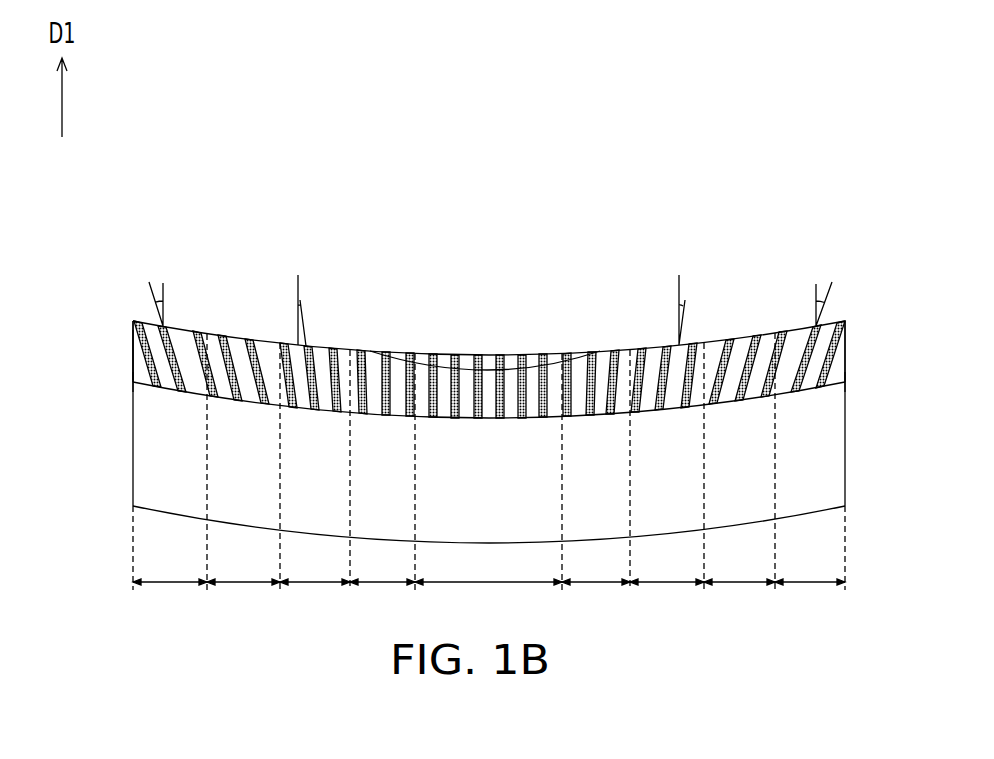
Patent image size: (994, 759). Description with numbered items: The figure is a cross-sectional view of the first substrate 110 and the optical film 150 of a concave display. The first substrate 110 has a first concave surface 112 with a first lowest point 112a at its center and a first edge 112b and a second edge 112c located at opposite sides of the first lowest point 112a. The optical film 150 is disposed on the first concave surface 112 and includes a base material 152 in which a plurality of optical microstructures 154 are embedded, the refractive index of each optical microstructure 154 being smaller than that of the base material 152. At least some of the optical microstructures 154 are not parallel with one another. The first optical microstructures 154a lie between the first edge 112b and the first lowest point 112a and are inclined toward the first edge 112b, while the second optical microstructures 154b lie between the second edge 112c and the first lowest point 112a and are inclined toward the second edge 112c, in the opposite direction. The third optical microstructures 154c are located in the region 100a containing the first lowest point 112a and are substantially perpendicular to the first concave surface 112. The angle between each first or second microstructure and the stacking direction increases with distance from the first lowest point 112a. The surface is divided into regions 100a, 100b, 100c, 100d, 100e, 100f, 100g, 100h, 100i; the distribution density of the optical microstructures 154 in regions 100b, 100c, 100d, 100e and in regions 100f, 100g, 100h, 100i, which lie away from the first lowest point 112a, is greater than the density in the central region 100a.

The first substrate 110 is at (820, 457).
The first concave surface 112 is at (133, 345).
The first lowest point 112a is at (490, 417).
The first edge 112b is at (846, 382).
The second edge 112c is at (133, 380).
The optical film 150 is at (820, 362).
The base material 152 is at (398, 377).
The optical microstructures 154 is at (481, 291).
The first optical microstructures 154a is at (688, 345).
The second optical microstructures 154b is at (173, 380).
The third optical microstructures 154c is at (433, 363).
The region 100a is at (488, 489).
The region 100b is at (596, 487).
The region 100c is at (667, 484).
The region 100d is at (739, 479).
The region 100e is at (810, 602).
The region 100f is at (382, 489).
The region 100g is at (315, 487).
The region 100h is at (243, 484).
The region 100i is at (170, 479).